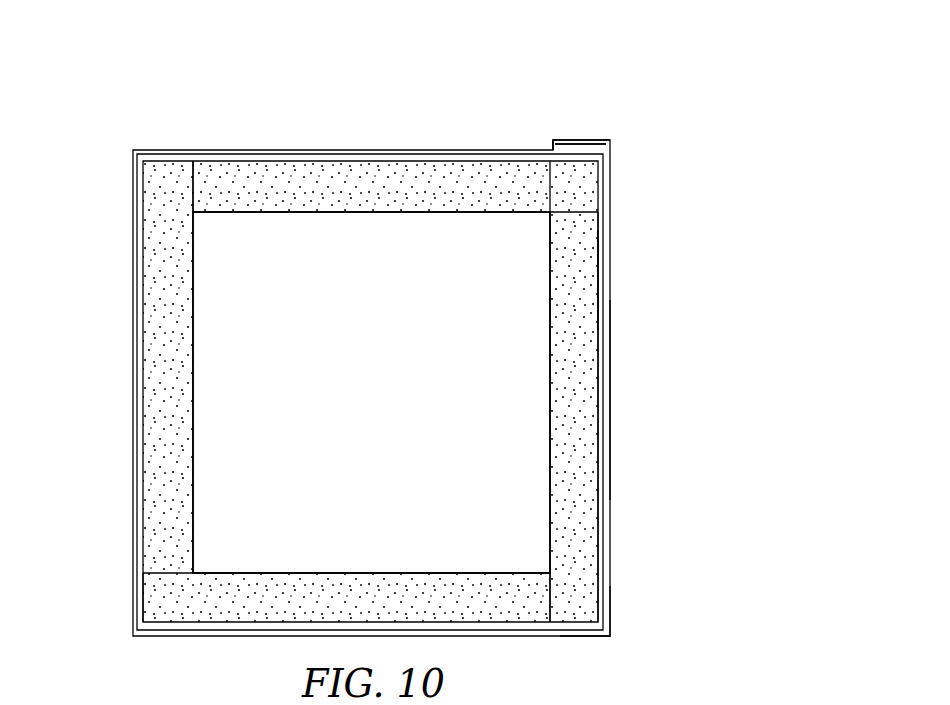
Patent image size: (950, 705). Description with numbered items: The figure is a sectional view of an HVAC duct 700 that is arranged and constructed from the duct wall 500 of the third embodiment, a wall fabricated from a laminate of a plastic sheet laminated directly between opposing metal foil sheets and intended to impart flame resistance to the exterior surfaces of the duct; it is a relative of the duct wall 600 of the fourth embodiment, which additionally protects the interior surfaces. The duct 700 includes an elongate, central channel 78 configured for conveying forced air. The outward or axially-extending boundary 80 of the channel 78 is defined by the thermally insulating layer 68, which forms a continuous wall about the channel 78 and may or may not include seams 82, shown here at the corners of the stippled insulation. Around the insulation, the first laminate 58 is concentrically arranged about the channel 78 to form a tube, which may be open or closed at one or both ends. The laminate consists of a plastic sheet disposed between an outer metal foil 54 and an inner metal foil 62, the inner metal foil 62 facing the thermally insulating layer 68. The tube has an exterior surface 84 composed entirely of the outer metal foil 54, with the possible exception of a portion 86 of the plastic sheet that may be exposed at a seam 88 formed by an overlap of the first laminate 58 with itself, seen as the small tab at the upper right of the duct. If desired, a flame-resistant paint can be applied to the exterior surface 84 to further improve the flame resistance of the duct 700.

The outer metal foil 54 is at (603, 546).
The first laminate 58 is at (562, 138).
The inner metal foil 62 is at (597, 242).
The thermally insulating layer 68 is at (402, 192).
The central channel 78 is at (365, 413).
The boundary of channel 80 is at (193, 402).
The seams 82 is at (192, 197).
The exterior surface 84 is at (287, 150).
The portion of plastic sheet 86 is at (553, 148).
The seam 88 is at (585, 150).
The duct wall 500 is at (608, 632).
The duct wall 600 is at (608, 418).
The HVAC duct 700 is at (636, 272).